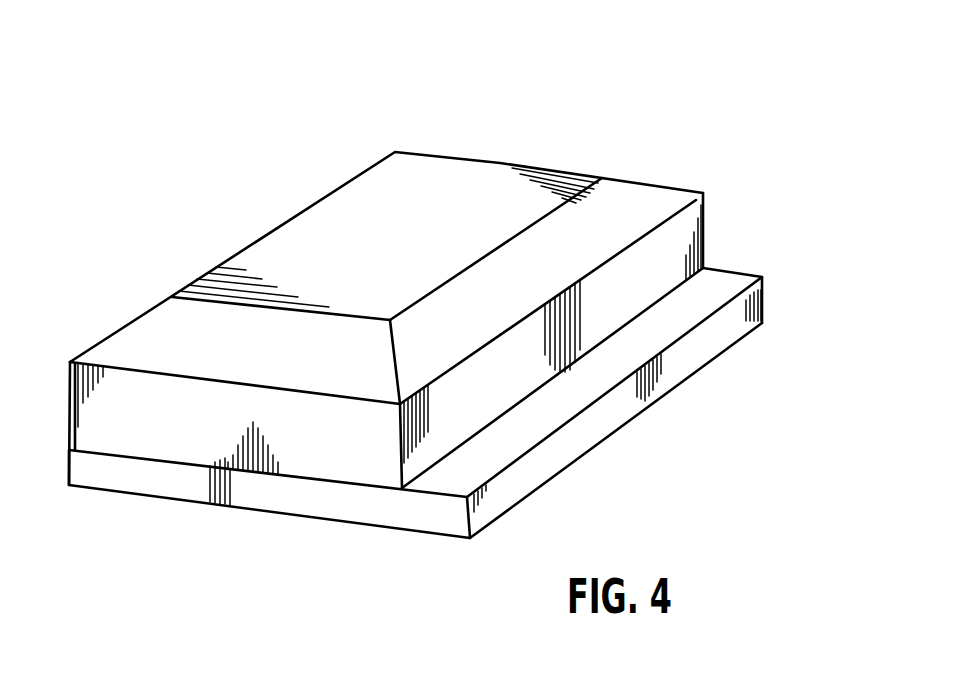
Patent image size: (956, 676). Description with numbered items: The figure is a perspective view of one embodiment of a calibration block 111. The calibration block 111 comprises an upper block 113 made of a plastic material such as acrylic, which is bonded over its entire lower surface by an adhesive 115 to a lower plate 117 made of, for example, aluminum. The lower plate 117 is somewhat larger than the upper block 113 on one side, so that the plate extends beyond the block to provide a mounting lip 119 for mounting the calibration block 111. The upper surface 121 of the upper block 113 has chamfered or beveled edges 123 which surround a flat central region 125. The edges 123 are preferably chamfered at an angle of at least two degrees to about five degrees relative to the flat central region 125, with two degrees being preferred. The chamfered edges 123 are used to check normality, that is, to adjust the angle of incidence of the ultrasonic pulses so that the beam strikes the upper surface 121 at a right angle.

The calibration block 111 is at (596, 111).
The upper surface 121 is at (644, 162).
The upper block 113 is at (708, 207).
The adhesive 115 is at (652, 303).
The lower plate 117 is at (763, 293).
The mounting lip 119 is at (625, 368).
The chamfered edges 123 is at (580, 217).
The flat central region 125 is at (325, 227).